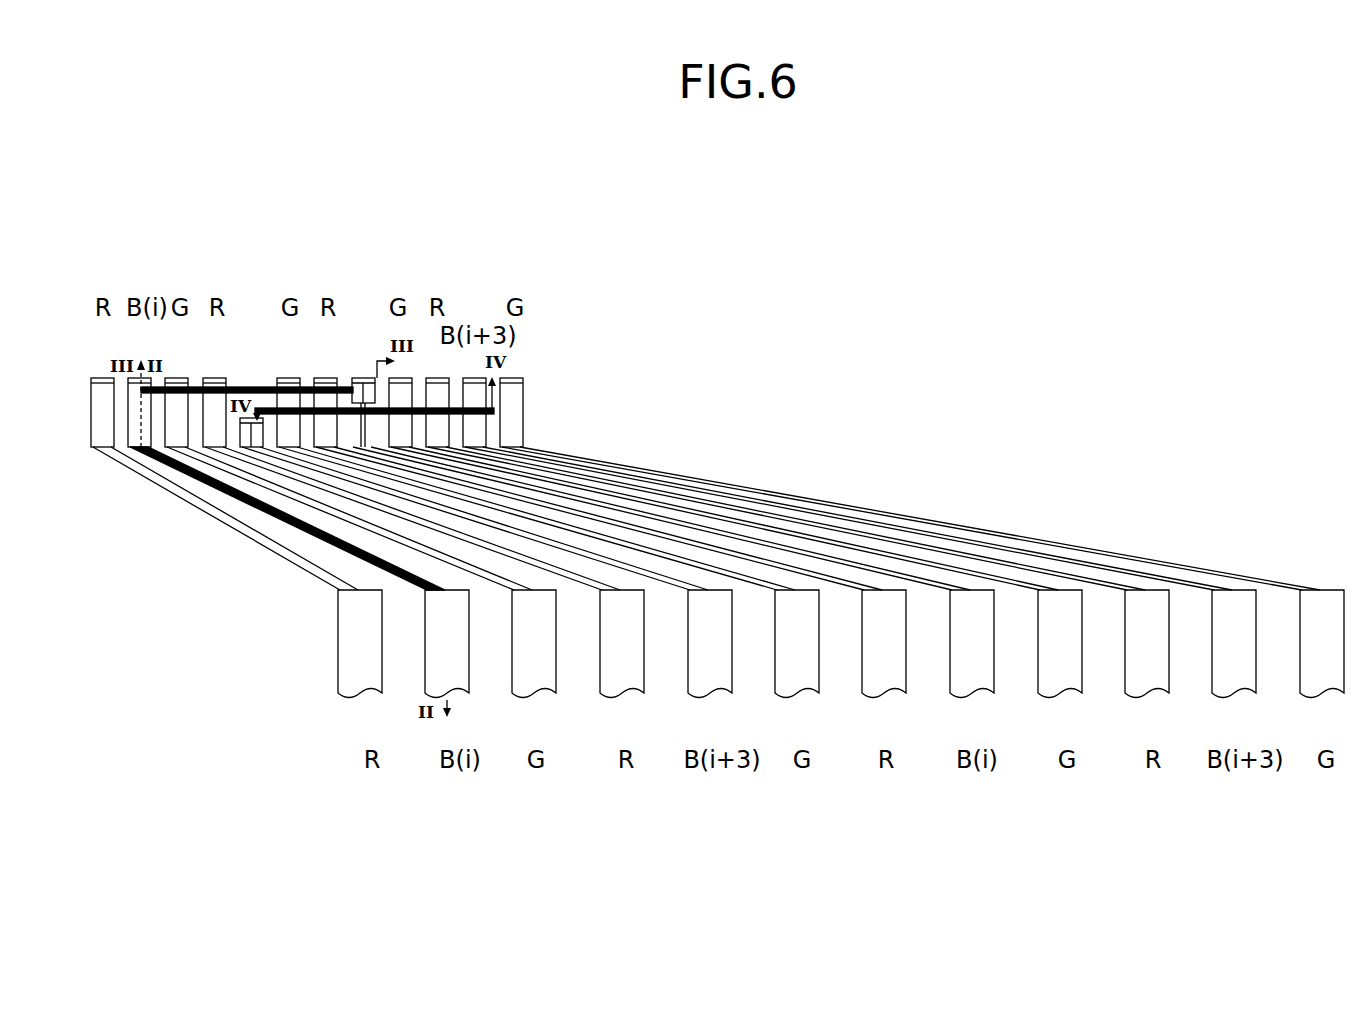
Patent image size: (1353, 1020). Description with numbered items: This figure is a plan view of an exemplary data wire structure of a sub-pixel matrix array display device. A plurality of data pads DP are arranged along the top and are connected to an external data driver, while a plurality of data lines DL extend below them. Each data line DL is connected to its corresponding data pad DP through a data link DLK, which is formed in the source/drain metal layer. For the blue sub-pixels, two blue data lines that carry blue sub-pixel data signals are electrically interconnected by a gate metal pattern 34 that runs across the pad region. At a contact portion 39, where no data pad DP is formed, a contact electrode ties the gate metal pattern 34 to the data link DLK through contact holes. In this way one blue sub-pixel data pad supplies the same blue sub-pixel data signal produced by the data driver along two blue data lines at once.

The gate metal pattern 34 is at (197, 388).
The contact portion 39 is at (265, 387).
The data pad DP is at (96, 448).
The data link DLK is at (195, 506).
The data line DL is at (341, 640).